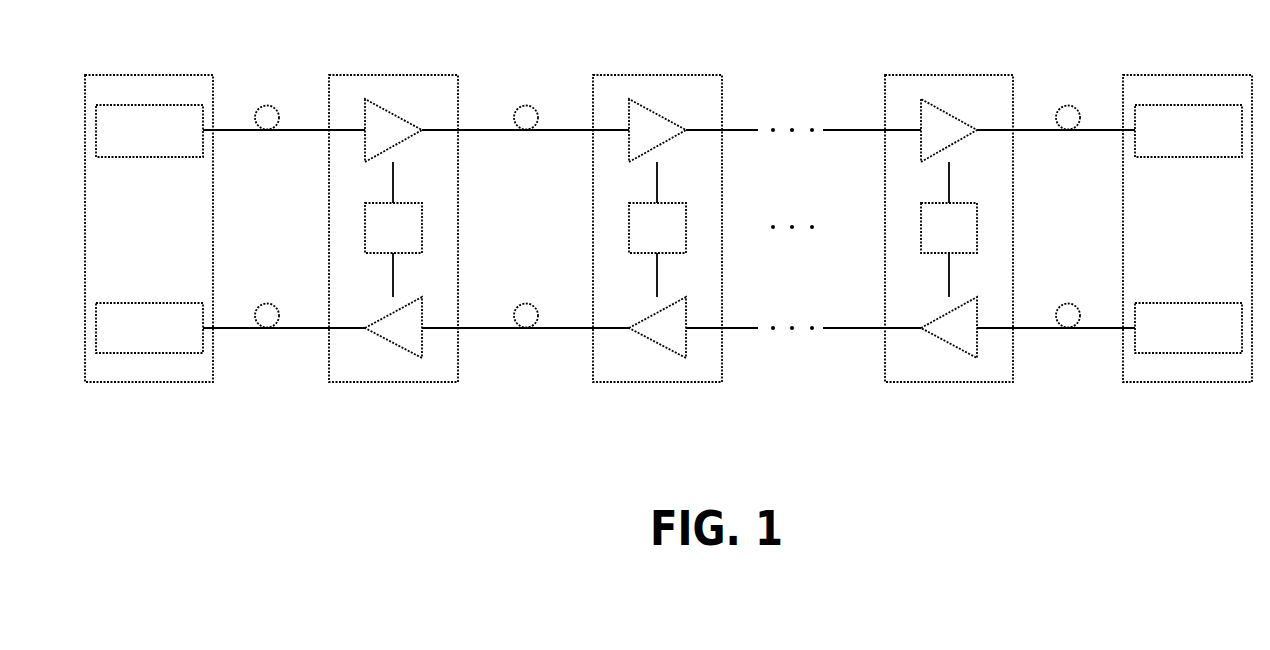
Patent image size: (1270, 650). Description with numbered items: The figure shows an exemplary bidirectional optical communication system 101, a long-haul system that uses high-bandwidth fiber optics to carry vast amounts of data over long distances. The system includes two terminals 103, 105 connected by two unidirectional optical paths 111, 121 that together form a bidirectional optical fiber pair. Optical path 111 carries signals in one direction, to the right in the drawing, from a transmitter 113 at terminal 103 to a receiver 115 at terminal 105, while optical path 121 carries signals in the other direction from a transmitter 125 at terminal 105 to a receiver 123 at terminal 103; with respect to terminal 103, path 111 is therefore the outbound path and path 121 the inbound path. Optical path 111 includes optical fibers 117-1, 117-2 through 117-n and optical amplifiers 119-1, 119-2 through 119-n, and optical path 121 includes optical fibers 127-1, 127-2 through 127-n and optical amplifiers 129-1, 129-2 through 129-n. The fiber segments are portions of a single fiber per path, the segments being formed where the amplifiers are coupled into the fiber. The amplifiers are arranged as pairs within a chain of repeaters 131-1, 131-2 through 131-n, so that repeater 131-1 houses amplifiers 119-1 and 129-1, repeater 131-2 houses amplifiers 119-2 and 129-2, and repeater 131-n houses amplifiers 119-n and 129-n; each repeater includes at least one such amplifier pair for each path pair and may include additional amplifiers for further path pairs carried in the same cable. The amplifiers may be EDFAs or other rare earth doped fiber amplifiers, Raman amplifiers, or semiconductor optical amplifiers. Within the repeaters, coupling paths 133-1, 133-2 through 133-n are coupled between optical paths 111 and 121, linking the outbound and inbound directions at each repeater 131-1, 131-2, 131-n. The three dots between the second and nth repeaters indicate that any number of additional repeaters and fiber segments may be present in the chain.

The bidirectional optical communication system 101 is at (745, 484).
The terminal 103 is at (149, 228).
The terminal 105 is at (1187, 228).
The optical path 111 is at (512, 49).
The transmitter 113 is at (149, 131).
The receiver 115 is at (1188, 131).
The optical fiber 117-1 is at (243, 131).
The optical fiber 117-2 is at (491, 131).
The optical fiber 117-n is at (1036, 131).
The optical amplifier 119-1 is at (393, 130).
The optical amplifier 119-2 is at (657, 130).
The optical amplifier 119-n is at (949, 130).
The optical path 121 is at (506, 414).
The receiver 123 is at (149, 328).
The transmitter 125 is at (1188, 328).
The optical fiber 127-1 is at (252, 329).
The optical fiber 127-2 is at (491, 329).
The optical fiber 127-n is at (1036, 329).
The optical amplifier 129-1 is at (393, 327).
The optical amplifier 129-2 is at (657, 327).
The optical amplifier 129-n is at (949, 327).
The repeater 131-1 is at (393, 228).
The repeater 131-2 is at (657, 228).
The repeater 131-n is at (949, 228).
The coupling path 133-1 is at (393, 229).
The coupling path 133-2 is at (657, 229).
The coupling path 133-n is at (949, 229).